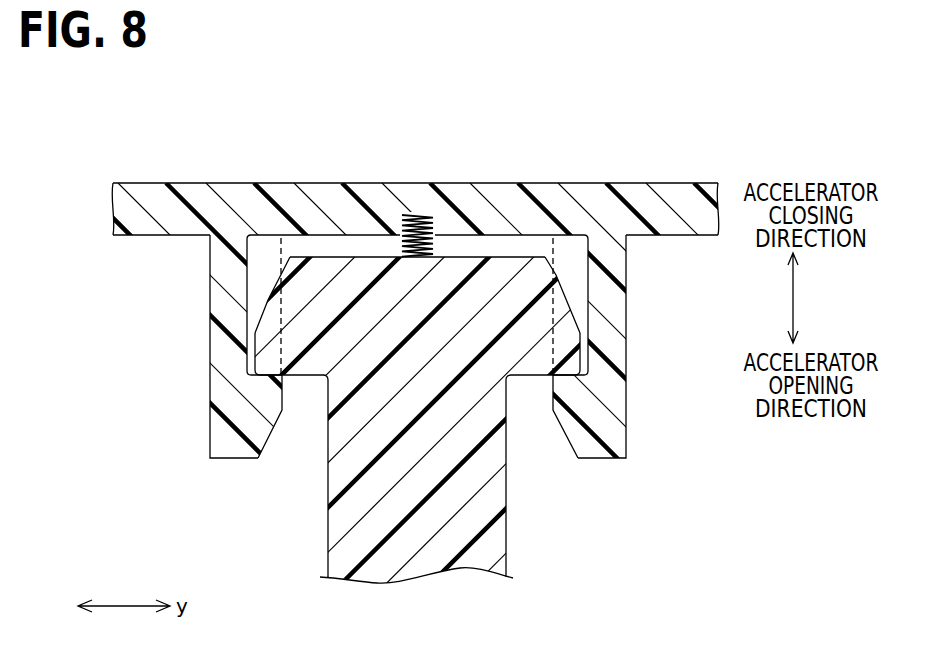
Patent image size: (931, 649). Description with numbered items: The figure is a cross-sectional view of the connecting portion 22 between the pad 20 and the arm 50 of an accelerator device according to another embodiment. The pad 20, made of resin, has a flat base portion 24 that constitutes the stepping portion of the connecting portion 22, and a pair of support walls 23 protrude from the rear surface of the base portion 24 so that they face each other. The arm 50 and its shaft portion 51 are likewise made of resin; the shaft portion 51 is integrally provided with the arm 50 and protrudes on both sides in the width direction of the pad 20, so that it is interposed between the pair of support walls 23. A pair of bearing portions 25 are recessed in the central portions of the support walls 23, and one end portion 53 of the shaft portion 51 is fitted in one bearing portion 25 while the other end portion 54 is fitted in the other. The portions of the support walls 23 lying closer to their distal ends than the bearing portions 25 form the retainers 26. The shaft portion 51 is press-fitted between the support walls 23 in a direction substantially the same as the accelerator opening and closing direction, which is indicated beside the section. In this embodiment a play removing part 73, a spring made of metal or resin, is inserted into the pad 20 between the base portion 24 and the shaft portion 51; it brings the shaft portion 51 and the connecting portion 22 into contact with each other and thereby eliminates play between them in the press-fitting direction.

The pad 20 is at (143, 183).
The connecting portion 22 is at (601, 470).
The support walls 23 is at (610, 340).
The base portion 24 is at (470, 200).
The bearing portions 25 is at (585, 365).
The retainers 26 is at (565, 390).
The arm 50 is at (328, 530).
The shaft portion 51 is at (358, 283).
The one end portion 53 is at (565, 323).
The other end portion 54 is at (270, 323).
The play removing part 73 is at (400, 242).